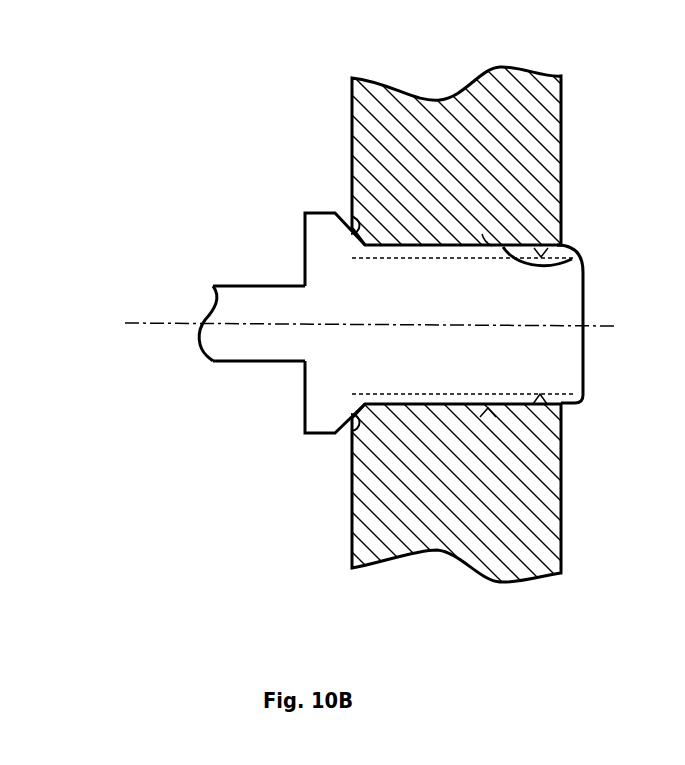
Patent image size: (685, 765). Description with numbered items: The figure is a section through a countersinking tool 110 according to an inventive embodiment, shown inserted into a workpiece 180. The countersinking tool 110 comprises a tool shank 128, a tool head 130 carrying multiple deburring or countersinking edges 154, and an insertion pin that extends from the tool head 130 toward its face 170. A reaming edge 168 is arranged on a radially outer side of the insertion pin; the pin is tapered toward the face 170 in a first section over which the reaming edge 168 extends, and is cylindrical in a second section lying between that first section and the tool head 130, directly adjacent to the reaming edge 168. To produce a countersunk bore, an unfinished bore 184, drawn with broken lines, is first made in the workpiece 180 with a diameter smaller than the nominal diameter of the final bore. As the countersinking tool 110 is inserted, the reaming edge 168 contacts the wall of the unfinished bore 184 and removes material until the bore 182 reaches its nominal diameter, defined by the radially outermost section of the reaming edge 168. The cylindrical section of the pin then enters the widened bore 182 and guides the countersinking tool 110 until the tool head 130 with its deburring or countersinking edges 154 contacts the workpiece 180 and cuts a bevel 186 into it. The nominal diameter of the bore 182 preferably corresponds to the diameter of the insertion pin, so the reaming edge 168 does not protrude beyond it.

The countersinking tool 110 is at (271, 132).
The tool shank 128 is at (253, 338).
The tool head 130 is at (328, 367).
The deburring or countersinking edges 154 is at (330, 253).
The reaming edge 168 is at (560, 262).
The face 170 is at (583, 347).
The workpiece 180 is at (530, 557).
The bore 182 is at (488, 245).
The unfinished bore 184 is at (548, 247).
The bevel 186 is at (352, 212).